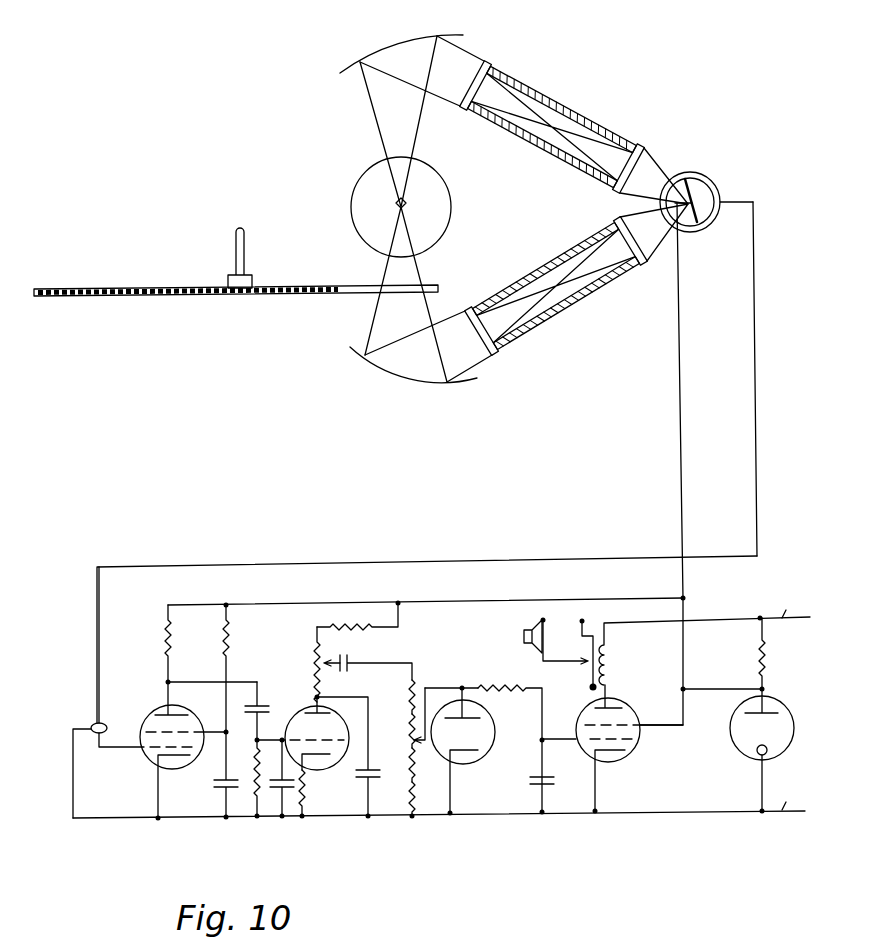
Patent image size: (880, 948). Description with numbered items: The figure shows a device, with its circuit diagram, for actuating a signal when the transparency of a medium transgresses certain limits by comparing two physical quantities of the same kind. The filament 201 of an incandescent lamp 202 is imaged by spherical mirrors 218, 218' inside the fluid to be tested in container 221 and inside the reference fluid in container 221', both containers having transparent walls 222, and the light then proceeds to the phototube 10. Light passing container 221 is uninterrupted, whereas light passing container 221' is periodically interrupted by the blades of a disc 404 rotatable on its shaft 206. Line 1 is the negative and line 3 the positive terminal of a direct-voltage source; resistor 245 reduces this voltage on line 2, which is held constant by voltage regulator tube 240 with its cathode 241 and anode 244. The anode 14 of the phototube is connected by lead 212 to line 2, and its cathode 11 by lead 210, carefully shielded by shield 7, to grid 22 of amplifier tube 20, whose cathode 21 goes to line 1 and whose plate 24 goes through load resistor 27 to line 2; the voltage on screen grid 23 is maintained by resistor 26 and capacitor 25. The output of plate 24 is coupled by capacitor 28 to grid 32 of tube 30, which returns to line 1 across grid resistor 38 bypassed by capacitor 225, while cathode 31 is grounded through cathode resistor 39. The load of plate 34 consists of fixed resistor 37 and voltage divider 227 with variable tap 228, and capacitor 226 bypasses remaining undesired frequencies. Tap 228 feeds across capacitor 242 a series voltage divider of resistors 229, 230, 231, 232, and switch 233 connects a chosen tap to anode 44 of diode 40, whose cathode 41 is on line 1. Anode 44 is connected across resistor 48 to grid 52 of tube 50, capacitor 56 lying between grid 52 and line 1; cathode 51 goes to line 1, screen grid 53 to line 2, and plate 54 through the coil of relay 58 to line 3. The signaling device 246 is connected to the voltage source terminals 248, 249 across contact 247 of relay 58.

The line 1 is at (792, 798).
The line 2 is at (770, 688).
The line 3 is at (794, 606).
The shield 7 is at (90, 726).
The phototube 10 is at (721, 195).
The cathode 11 is at (722, 206).
The anode 14 is at (665, 201).
The amplifier tube 20 is at (146, 769).
The cathode 21 is at (162, 768).
The grid 22 is at (140, 744).
The screen grid 23 is at (202, 730).
The plate 24 is at (166, 701).
The capacitor 25 is at (220, 782).
The resistor 26 is at (222, 650).
The load resistor 27 is at (160, 650).
The capacitor 28 is at (250, 708).
The amplifier tube 30 is at (340, 761).
The cathode 31 is at (302, 764).
The grid 32 is at (284, 736).
The plate 34 is at (315, 702).
The fixed resistor 37 is at (328, 626).
The grid resistor 38 is at (256, 764).
The cathode resistor 39 is at (315, 794).
The diode 40 is at (498, 749).
The cathode 41 is at (454, 762).
The anode 44 is at (460, 702).
The resistor 48 is at (514, 686).
The amplifier tube 50 is at (635, 747).
The cathode 51 is at (594, 762).
The grid 52 is at (560, 738).
The screen grid 53 is at (640, 722).
The plate 54 is at (618, 704).
The capacitor 56 is at (528, 790).
The relay 58 is at (612, 658).
The filament 201 is at (396, 208).
The incandescent lamp 202 is at (351, 204).
The shaft 206 is at (236, 232).
The lead 210 is at (756, 532).
The lead 212 is at (681, 532).
The spherical mirror 218 is at (395, 53).
The spherical mirror 218' is at (413, 373).
The container 221 is at (552, 126).
The container 221' is at (556, 285).
The transparent wall 222 is at (483, 67).
The capacitor 225 is at (272, 786).
The capacitor 226 is at (348, 758).
The voltage divider 227 is at (308, 668).
The variable tap 228 is at (327, 660).
The resistor 229 is at (410, 690).
The resistor 230 is at (410, 726).
The resistor 231 is at (410, 754).
The resistor 232 is at (410, 790).
The switch 233 is at (424, 744).
The voltage regulator tube 240 is at (746, 759).
The cathode 241 is at (760, 764).
The capacitor 242 is at (350, 656).
The anode 244 is at (760, 690).
The resistor 245 is at (764, 658).
The signaling device 246 is at (518, 642).
The contact 247 is at (589, 670).
The terminal 248 is at (558, 612).
The terminal 249 is at (600, 612).
The disc 404 is at (188, 282).